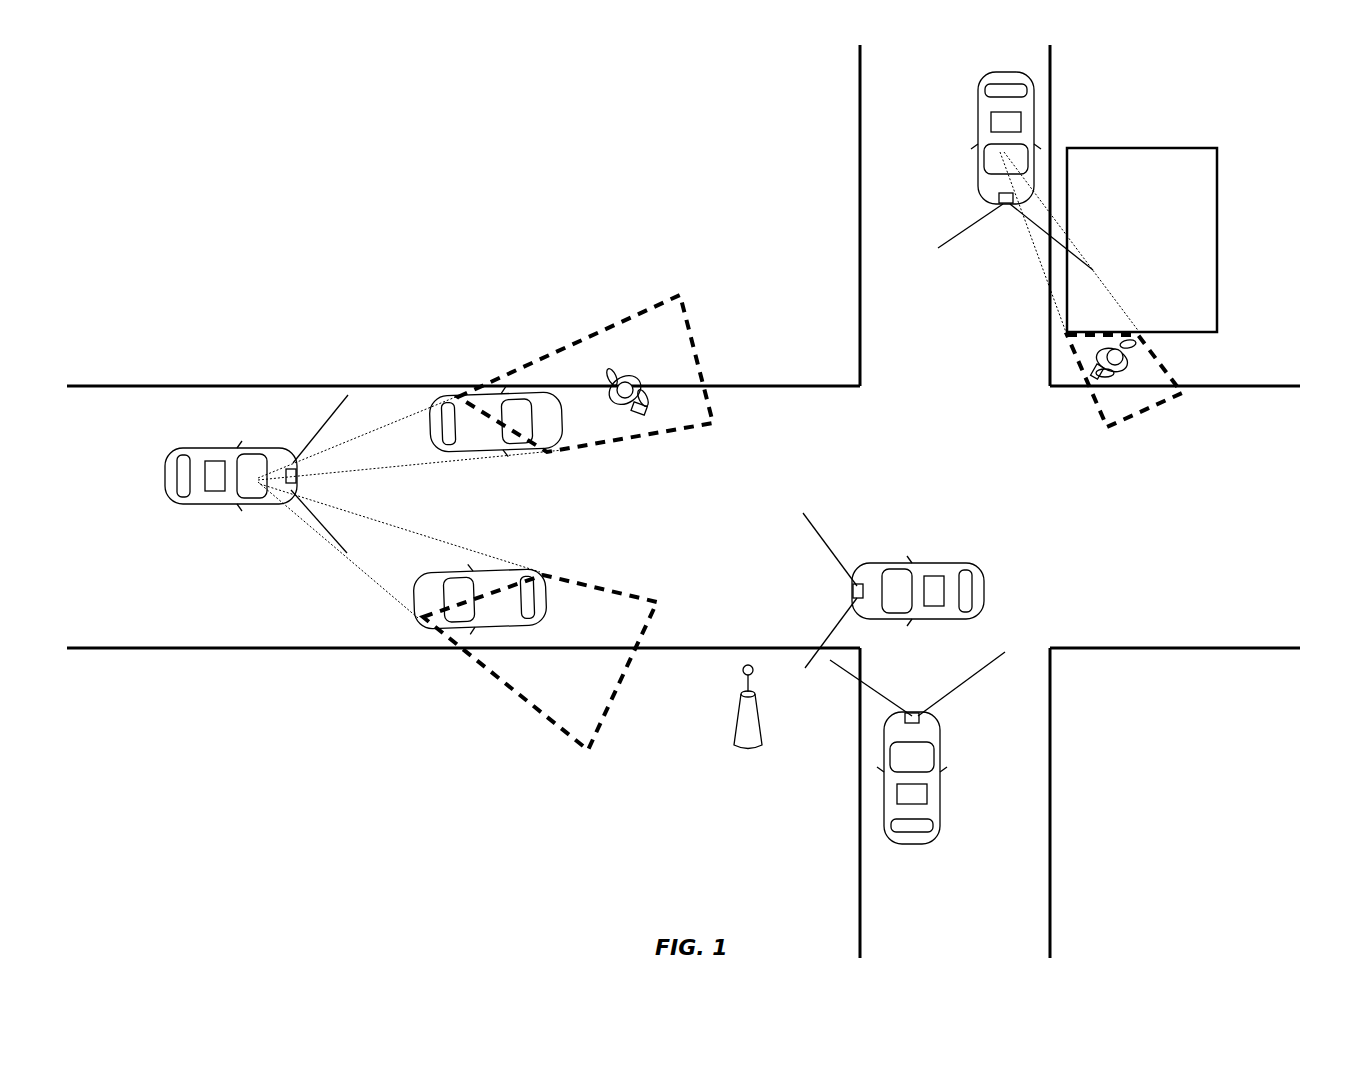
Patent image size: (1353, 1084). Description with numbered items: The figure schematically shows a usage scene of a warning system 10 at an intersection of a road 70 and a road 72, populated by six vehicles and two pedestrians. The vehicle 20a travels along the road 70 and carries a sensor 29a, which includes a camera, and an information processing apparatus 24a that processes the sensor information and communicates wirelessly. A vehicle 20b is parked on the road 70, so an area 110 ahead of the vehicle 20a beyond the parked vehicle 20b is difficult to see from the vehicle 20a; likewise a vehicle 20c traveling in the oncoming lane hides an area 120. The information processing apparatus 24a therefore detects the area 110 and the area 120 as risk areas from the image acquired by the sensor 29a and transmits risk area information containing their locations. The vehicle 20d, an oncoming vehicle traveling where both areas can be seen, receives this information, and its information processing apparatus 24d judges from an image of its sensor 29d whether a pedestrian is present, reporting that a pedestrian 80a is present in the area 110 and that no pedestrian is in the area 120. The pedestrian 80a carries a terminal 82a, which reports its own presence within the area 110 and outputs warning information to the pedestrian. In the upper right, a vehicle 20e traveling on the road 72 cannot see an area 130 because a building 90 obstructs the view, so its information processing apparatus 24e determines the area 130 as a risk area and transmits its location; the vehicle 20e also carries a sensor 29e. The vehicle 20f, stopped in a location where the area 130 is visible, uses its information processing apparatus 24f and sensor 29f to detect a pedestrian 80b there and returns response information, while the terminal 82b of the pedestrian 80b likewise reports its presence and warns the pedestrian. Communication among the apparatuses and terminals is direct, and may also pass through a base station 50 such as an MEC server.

The warning system 10 is at (1336, 65).
The vehicle 20a is at (346, 506).
The vehicle 20b is at (425, 447).
The vehicle 20c is at (415, 598).
The vehicle 20d is at (909, 590).
The vehicle 20e is at (1022, 203).
The vehicle 20f is at (917, 766).
The information processing apparatus 24a is at (218, 491).
The information processing apparatus 24d is at (937, 577).
The information processing apparatus 24e is at (990, 124).
The information processing apparatus 24f is at (930, 793).
The sensor 29a is at (293, 463).
The sensor 29d is at (855, 591).
The sensor 29e is at (1007, 205).
The sensor 29f is at (913, 712).
The base station 50 is at (740, 688).
The road 70 is at (194, 632).
The road 72 is at (1042, 899).
The pedestrian 80a is at (652, 401).
The pedestrian 80b is at (1128, 381).
The terminal 82a is at (645, 418).
The terminal 82b is at (1094, 380).
The building 90 is at (1172, 148).
The area 110 is at (706, 346).
The area 120 is at (540, 718).
The area 130 is at (1137, 428).